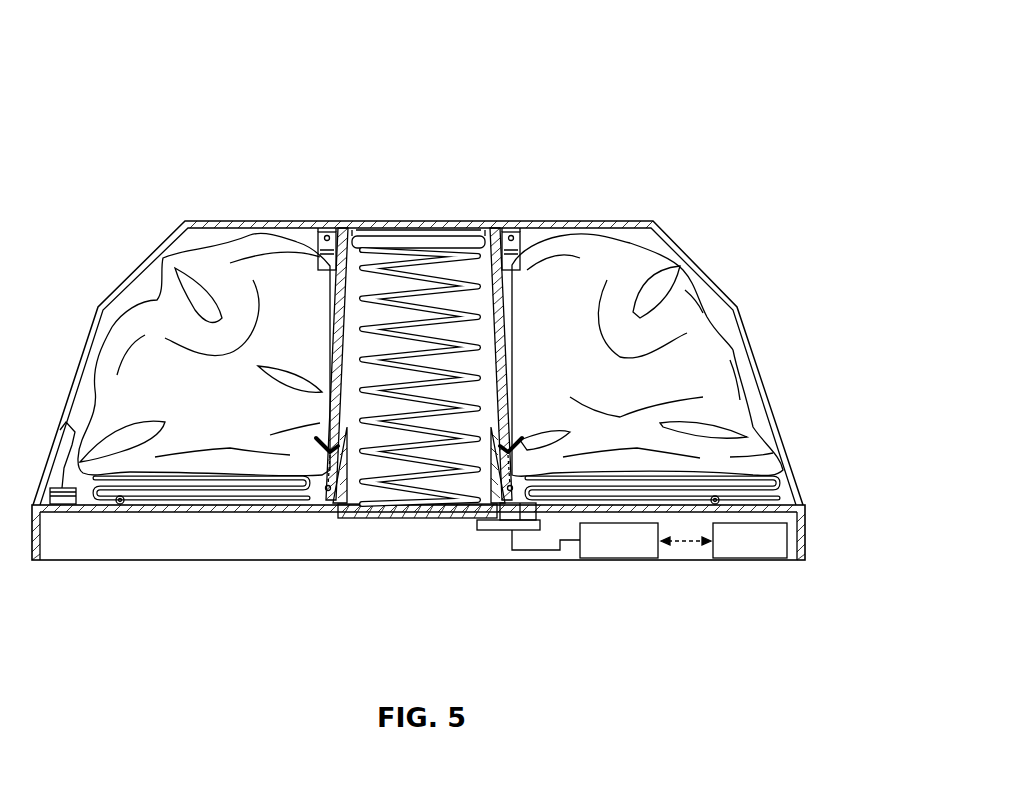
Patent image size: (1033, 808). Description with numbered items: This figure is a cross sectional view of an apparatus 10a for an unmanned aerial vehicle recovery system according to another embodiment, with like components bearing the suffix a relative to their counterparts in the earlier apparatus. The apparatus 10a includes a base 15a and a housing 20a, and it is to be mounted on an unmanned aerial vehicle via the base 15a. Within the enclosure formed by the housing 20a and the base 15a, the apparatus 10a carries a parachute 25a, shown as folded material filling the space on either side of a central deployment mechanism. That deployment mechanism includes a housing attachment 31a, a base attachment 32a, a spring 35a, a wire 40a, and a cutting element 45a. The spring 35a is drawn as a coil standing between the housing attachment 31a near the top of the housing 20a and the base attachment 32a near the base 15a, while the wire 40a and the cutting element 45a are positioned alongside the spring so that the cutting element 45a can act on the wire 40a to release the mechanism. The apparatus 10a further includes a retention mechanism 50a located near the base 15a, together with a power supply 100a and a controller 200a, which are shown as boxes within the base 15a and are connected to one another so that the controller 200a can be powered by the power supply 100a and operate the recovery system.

The apparatus 10a is at (535, 89).
The base 15a is at (805, 555).
The housing 20a is at (747, 313).
The parachute 25a is at (687, 317).
The housing attachment 31a is at (340, 293).
The base attachment 32a is at (333, 465).
The spring 35a is at (455, 255).
The wire 40a is at (505, 295).
The cutting element 45a is at (507, 533).
The retention mechanism 50a is at (62, 505).
The power supply 100a is at (594, 552).
The controller 200a is at (725, 552).